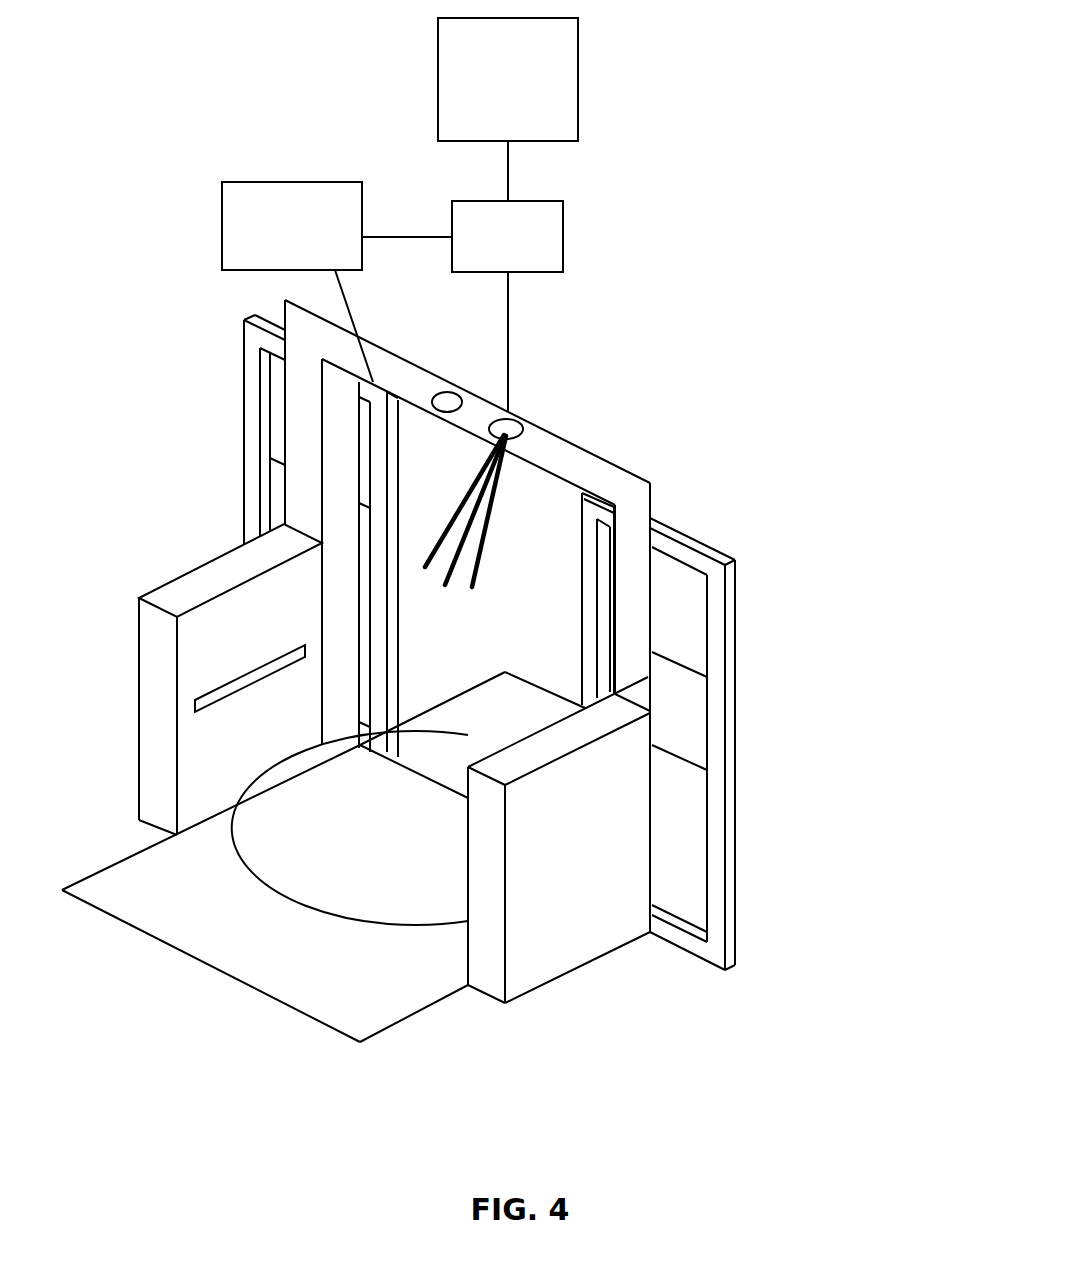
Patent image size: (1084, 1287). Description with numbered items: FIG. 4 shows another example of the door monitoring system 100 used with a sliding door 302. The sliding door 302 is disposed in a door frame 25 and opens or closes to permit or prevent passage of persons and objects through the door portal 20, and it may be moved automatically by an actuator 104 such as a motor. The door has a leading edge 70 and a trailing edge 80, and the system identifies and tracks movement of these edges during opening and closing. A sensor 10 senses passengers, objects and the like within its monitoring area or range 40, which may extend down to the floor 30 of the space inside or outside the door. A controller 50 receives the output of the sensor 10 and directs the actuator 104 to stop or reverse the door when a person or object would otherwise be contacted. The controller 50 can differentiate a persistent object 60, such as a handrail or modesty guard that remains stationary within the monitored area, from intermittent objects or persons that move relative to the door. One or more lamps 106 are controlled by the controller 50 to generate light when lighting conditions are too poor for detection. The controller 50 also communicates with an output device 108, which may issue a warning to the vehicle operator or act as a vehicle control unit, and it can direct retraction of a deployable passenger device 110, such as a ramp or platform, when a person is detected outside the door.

The sensor 10 is at (519, 417).
The door portal 20 is at (352, 456).
The door frame 25 is at (632, 511).
The floor 30 is at (373, 1012).
The monitoring area or range 40 is at (233, 820).
The controller 50 is at (490, 262).
The persistent object 60 is at (172, 603).
The leading edge 70 is at (378, 533).
The trailing edge 80 is at (252, 353).
The door monitoring system 100 is at (876, 545).
The actuator 104 is at (266, 253).
The lamp 106 is at (441, 392).
The output device 108 is at (482, 95).
The deployable passenger device 110 is at (512, 697).
The sliding door 302 is at (687, 712).